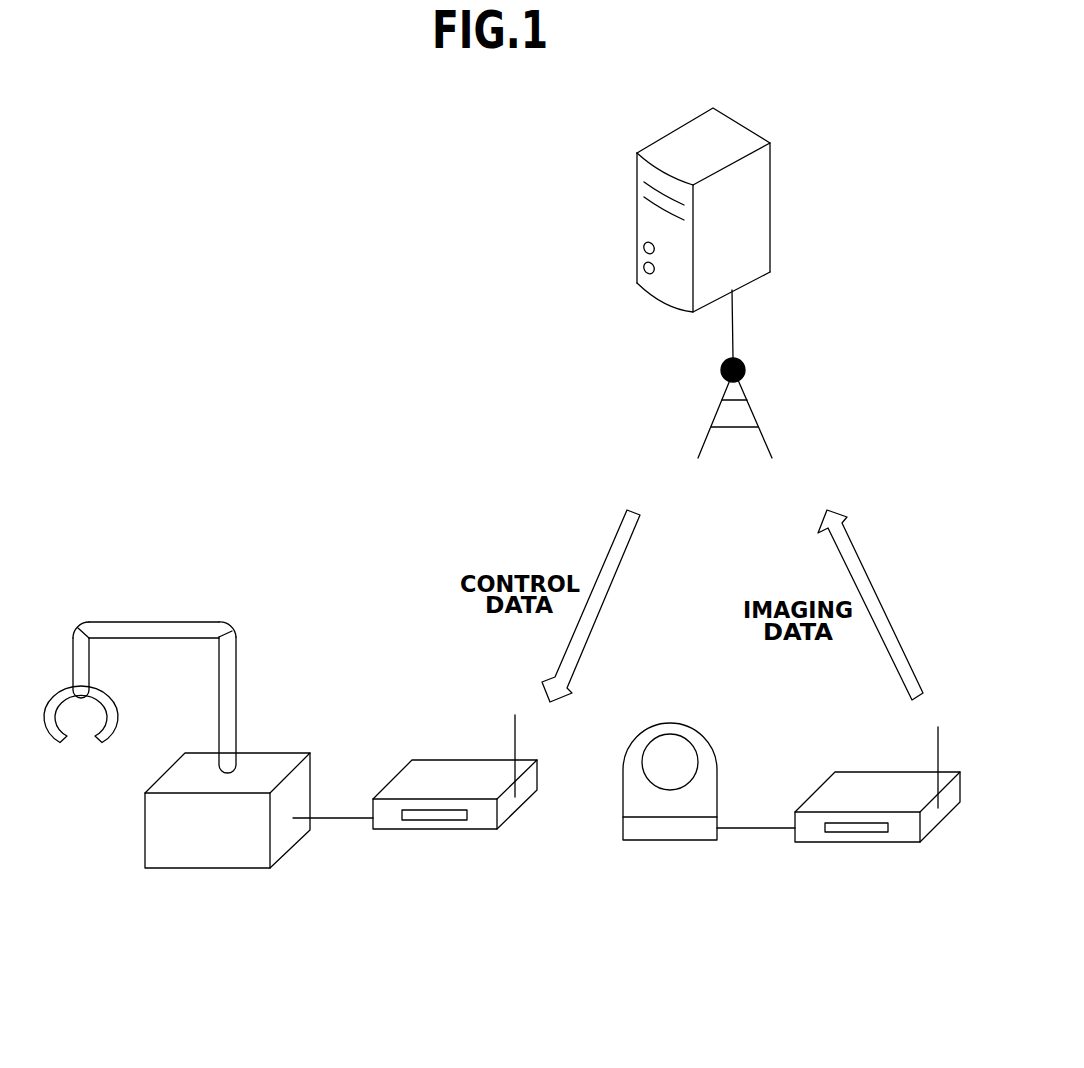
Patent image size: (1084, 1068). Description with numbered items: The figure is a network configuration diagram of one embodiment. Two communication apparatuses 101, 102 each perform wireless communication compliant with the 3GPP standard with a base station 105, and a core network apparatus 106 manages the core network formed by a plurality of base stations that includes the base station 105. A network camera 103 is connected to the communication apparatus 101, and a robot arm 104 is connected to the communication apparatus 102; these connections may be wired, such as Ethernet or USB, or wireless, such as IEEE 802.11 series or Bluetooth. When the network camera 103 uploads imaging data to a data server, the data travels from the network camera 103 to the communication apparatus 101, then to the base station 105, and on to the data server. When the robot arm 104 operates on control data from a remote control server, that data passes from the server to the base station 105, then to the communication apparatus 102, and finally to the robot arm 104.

The communication apparatus 101 is at (858, 843).
The communication apparatus 102 is at (435, 831).
The network camera 103 is at (668, 842).
The robot arm 104 is at (210, 870).
The base station 105 is at (755, 409).
The core network apparatus 106 is at (772, 202).